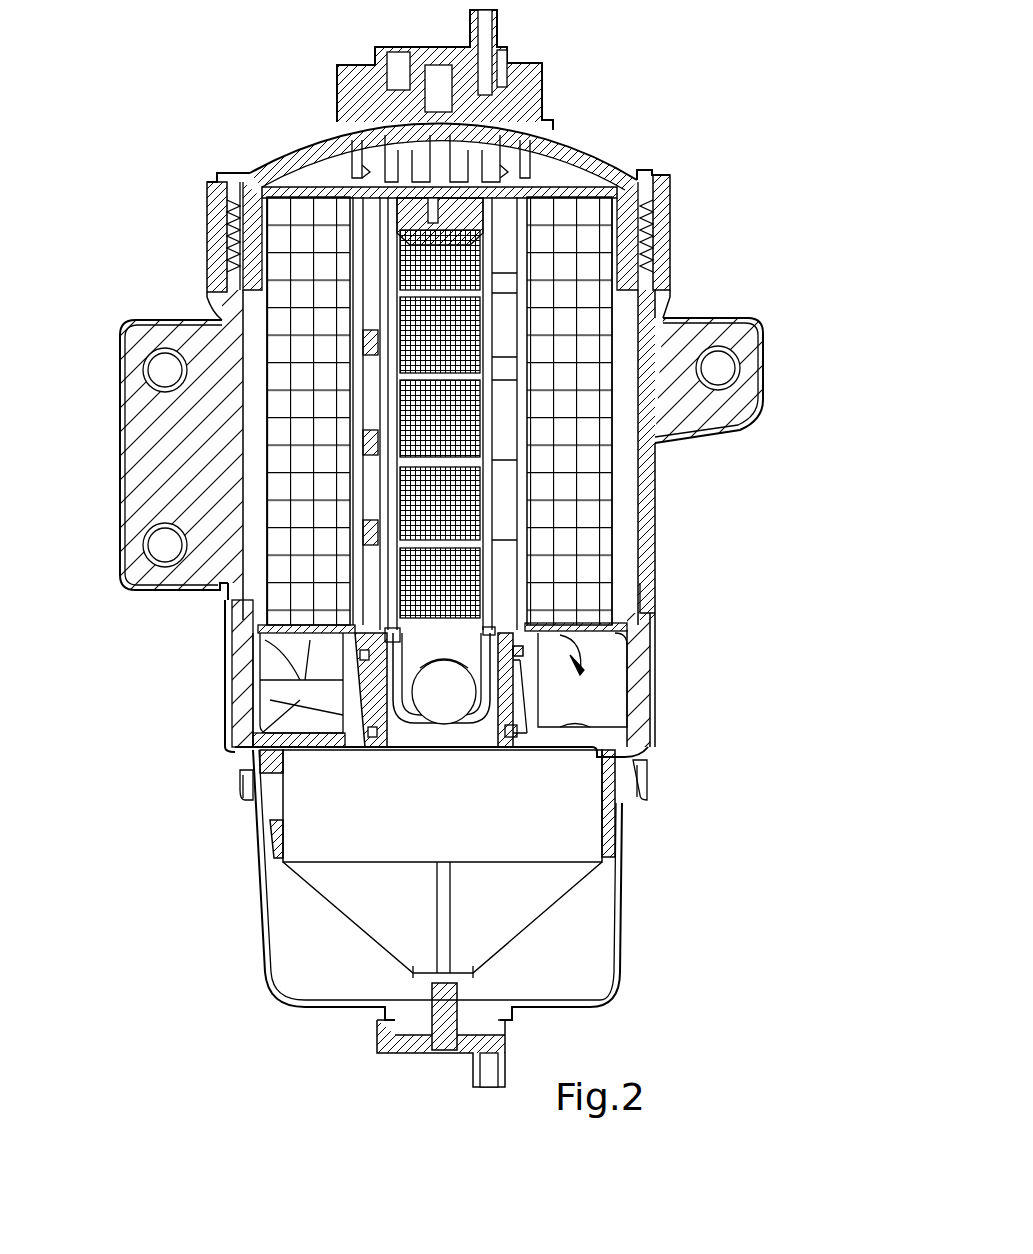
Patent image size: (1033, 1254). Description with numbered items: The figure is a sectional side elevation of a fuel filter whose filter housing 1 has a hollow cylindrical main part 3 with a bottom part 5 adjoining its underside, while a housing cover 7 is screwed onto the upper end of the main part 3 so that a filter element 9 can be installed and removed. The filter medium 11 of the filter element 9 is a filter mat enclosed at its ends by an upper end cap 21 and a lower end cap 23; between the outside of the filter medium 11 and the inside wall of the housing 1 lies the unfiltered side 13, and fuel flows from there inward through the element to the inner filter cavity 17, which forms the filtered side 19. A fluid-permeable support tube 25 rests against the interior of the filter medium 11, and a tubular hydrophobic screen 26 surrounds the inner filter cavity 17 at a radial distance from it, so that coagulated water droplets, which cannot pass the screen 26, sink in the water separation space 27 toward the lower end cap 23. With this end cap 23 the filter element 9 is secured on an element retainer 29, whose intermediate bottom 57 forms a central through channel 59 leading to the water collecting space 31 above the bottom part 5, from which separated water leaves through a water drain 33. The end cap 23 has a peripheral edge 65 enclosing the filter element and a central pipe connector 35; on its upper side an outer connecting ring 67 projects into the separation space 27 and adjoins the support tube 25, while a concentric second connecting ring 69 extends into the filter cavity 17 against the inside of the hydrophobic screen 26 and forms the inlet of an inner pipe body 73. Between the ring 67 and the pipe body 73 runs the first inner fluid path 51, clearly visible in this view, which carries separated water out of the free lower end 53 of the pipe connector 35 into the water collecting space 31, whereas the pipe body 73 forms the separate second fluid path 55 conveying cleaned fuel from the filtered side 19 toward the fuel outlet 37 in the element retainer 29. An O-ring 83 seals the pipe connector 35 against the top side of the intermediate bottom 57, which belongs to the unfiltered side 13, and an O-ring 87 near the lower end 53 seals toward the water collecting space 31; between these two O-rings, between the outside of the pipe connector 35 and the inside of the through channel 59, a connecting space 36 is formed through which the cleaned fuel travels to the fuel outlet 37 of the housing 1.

The filter housing 1 is at (190, 292).
The hollow cylindrical main part 3 is at (645, 552).
The bottom part 5 is at (622, 828).
The housing cover 7 is at (605, 153).
The filter element 9 is at (673, 200).
The filter medium 11 is at (307, 250).
The unfiltered side 13 is at (625, 450).
The inner filter cavity 17 is at (718, 350).
The filtered side 19 is at (640, 594).
The end cap 21 is at (323, 197).
The end cap 23 is at (235, 612).
The support tube 25 is at (527, 392).
The hydrophobic screen 26 is at (527, 340).
The water separation space 27 is at (503, 500).
The element retainer 29 is at (520, 690).
The water collecting space 31 is at (493, 915).
The water drain 33 is at (445, 998).
The pipe connector 35 is at (390, 680).
The connecting space 36 is at (380, 690).
The fuel outlet 37 is at (545, 702).
The first inner fluid path 51 is at (360, 655).
The free lower end 53 is at (380, 757).
The second fluid path 55 is at (425, 610).
The intermediate bottom 57 is at (642, 748).
The central through channel 59 is at (600, 735).
The peripheral edge 65 is at (245, 555).
The connecting ring 67 is at (420, 613).
The second connecting ring 69 is at (600, 630).
The inner pipe body 73 is at (437, 707).
The O-ring 83 is at (523, 648).
The O-ring 87 is at (240, 768).